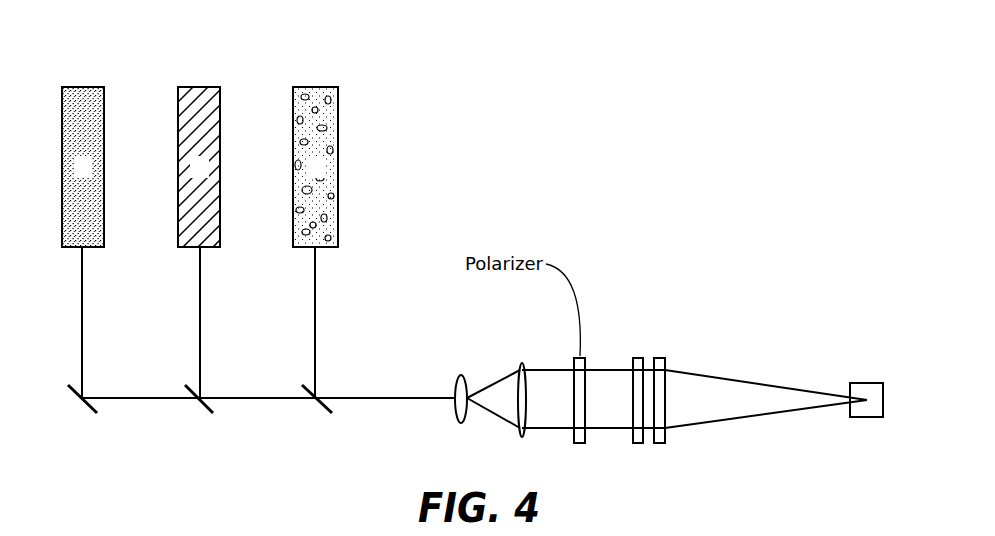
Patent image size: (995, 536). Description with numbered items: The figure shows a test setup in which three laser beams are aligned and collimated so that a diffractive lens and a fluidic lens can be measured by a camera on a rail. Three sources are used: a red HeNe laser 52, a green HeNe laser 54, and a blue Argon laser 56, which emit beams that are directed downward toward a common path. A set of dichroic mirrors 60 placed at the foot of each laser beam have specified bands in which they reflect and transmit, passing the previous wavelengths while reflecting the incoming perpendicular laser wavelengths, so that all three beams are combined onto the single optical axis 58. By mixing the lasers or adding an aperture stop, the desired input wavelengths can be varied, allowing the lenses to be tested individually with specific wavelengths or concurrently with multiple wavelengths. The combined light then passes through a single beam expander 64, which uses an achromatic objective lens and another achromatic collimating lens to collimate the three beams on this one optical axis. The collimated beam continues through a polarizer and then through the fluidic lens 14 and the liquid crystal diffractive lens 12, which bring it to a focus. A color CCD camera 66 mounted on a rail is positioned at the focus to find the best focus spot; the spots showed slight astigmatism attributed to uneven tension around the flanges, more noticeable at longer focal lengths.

The red laser 52 is at (88, 85).
The green laser 54 is at (204, 85).
The blue laser 56 is at (320, 85).
The dichroic mirrors 60 is at (90, 415).
The optical axis 58 is at (420, 400).
The beam expander 64 is at (522, 366).
The fluidic lens 14 is at (636, 357).
The diffractive lens 12 is at (658, 355).
The color CCD camera 66 is at (868, 418).